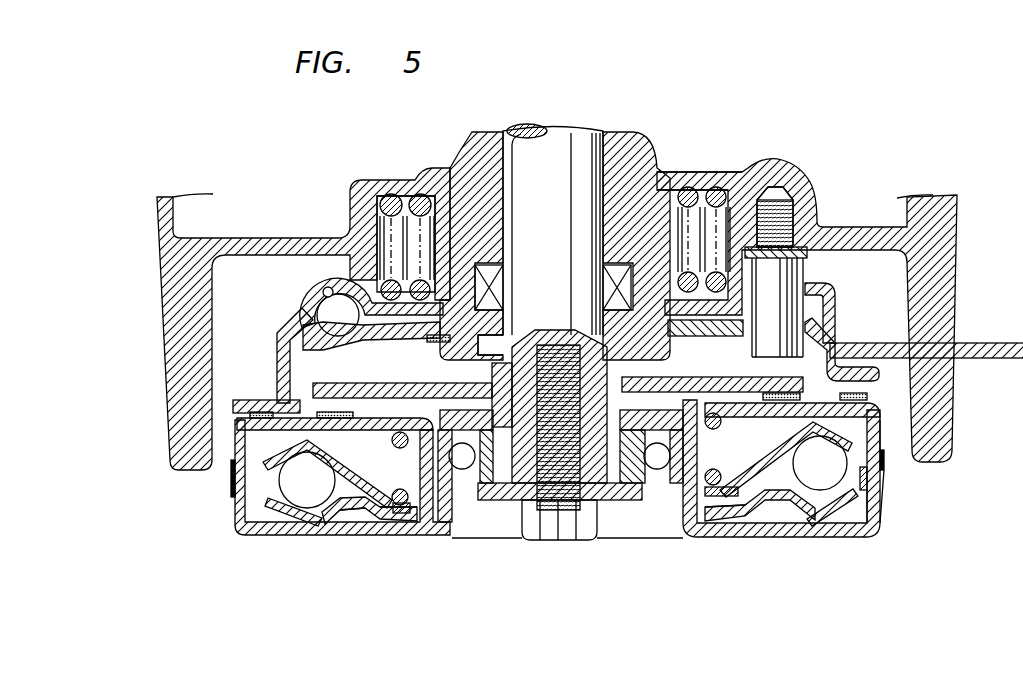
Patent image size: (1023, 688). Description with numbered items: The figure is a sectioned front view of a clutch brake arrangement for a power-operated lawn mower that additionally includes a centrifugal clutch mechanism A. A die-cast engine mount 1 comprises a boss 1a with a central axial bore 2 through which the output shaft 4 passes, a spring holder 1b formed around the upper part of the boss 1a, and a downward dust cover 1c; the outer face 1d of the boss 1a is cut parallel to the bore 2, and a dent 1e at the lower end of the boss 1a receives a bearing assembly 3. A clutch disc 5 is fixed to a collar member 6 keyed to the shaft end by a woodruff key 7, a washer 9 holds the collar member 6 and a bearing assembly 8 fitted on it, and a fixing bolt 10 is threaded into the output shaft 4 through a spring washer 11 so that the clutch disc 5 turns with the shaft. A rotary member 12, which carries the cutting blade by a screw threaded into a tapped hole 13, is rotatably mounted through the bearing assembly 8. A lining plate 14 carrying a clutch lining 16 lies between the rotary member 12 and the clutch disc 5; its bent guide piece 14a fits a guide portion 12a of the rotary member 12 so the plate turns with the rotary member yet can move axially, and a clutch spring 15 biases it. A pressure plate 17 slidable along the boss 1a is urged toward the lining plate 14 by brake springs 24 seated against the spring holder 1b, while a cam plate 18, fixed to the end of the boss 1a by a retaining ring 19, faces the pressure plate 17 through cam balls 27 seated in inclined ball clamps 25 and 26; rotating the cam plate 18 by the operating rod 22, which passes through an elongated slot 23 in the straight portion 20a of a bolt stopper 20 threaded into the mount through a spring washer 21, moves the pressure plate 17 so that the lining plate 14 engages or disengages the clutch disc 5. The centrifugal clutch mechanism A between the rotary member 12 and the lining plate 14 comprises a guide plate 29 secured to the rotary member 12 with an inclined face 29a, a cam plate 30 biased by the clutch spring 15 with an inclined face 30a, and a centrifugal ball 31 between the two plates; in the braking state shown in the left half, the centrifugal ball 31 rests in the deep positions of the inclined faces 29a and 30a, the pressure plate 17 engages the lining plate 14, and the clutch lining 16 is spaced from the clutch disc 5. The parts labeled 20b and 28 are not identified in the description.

The engine mount 1 is at (792, 163).
The boss 1a is at (662, 258).
The spring holder 1b is at (367, 193).
The dust cover 1c is at (187, 383).
The outer face 1d is at (443, 247).
The dent 1e is at (490, 345).
The axial bore 2 is at (515, 131).
The bearing assembly 3 is at (503, 283).
The output shaft 4 is at (562, 131).
The clutch disc 5 is at (688, 380).
The collar member 6 is at (605, 488).
The woodruff key 7 is at (515, 423).
The bearing assembly 8 is at (447, 480).
The washer 9 is at (632, 502).
The fixing bolt 10 is at (555, 530).
The spring washer 11 is at (522, 505).
The rotary member 12 is at (298, 533).
The guide portion 12a is at (880, 490).
The tapped hole 13 is at (357, 540).
The lining plate 14 is at (370, 420).
The guide piece 14a is at (872, 475).
The clutch spring 15 is at (403, 537).
The clutch lining 16 is at (335, 415).
The pressure plate 17 is at (282, 332).
The cam plate 18 is at (392, 327).
The retaining ring 19 is at (435, 343).
The bolt stopper 20 is at (805, 273).
The straight portion 20a is at (790, 312).
The bolt head 20b is at (765, 215).
The spring washer 21 is at (822, 227).
The operating rod 22 is at (997, 347).
The elongated slot 23 is at (760, 340).
The brake spring 24 is at (417, 193).
The ball clamps 25 is at (332, 330).
The ball clamps 26 is at (328, 292).
The cam balls 27 is at (343, 308).
The elastic pad 28 is at (260, 410).
The guide plate 29 is at (333, 510).
The inclined face 29a is at (253, 530).
The cam plate 30 is at (350, 473).
The inclined face 30a is at (233, 472).
The centrifugal ball 31 is at (287, 517).
The centrifugal clutch mechanism A is at (275, 487).